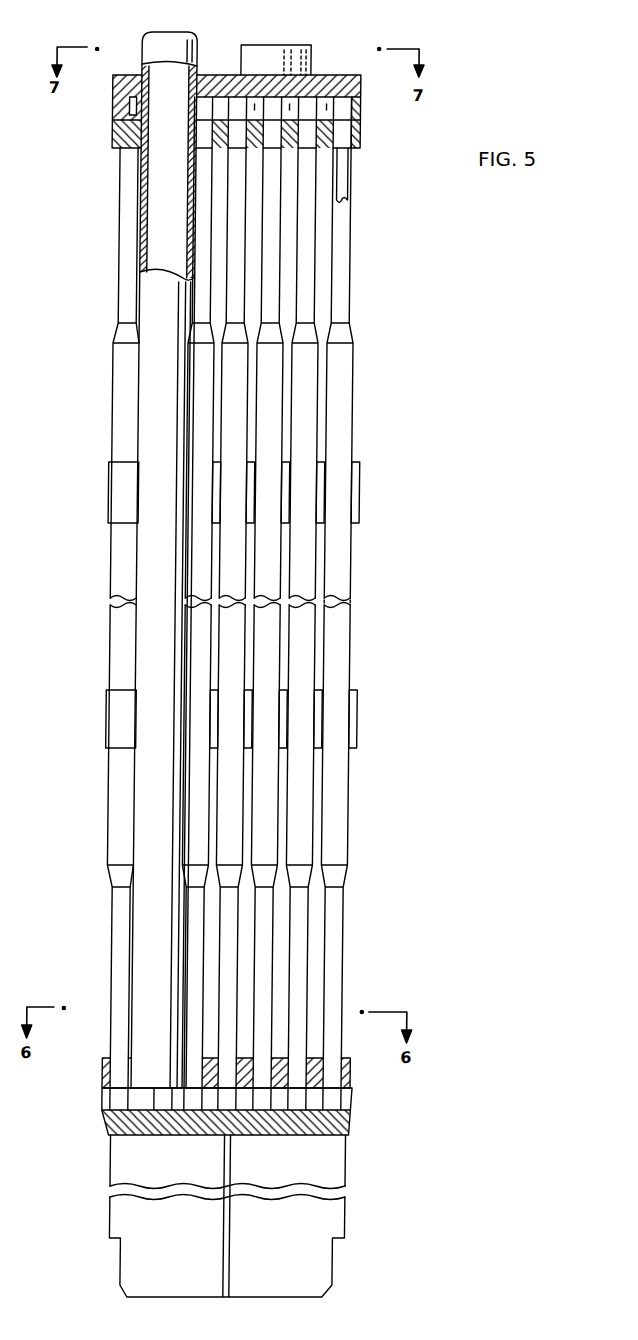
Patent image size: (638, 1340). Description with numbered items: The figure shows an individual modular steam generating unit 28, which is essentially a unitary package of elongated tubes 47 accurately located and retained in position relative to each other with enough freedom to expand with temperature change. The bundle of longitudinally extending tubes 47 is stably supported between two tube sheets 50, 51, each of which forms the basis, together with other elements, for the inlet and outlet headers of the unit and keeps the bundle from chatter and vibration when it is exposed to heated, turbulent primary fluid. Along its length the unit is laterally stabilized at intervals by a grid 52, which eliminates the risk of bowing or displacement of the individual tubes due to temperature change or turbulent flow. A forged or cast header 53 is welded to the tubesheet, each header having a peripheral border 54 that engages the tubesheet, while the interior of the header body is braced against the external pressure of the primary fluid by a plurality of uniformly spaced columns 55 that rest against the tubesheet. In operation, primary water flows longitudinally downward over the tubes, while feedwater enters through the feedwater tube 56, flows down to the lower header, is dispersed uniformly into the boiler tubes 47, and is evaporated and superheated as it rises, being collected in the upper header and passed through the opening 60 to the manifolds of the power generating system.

The steam generating unit 28 is at (367, 291).
The tubes 47 is at (349, 625).
The tube sheet 50 is at (344, 1080).
The tube sheet 51 is at (359, 130).
The grid 52 is at (211, 66).
The header 53 is at (322, 1136).
The peripheral border 54 is at (359, 101).
The columns 55 is at (253, 108).
The feedwater tube 56 is at (167, 903).
The opening 60 is at (257, 54).